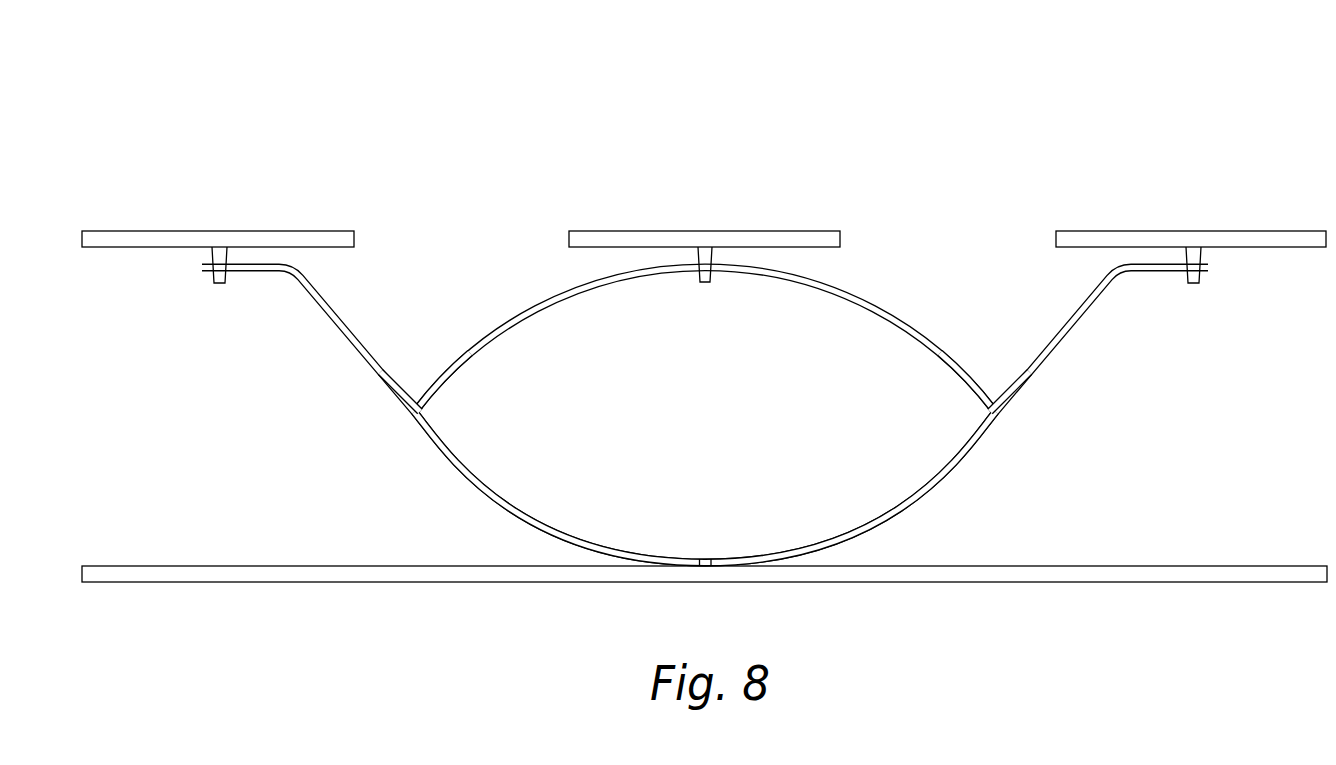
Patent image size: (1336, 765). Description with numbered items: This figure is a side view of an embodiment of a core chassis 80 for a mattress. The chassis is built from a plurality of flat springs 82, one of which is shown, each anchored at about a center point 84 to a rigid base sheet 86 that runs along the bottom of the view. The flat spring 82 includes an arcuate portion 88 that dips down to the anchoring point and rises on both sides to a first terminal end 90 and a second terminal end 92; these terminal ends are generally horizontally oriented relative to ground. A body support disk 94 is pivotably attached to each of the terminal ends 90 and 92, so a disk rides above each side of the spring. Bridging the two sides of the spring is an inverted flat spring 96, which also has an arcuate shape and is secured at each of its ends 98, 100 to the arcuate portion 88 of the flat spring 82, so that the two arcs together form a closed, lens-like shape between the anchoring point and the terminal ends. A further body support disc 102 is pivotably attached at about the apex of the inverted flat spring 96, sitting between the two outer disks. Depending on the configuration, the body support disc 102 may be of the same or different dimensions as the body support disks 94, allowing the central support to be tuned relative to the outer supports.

The core chassis 80 is at (704, 304).
The flat spring 82 is at (705, 389).
The center point 84 is at (712, 558).
The rigid base sheet 86 is at (220, 565).
The arcuate portion 88 is at (495, 494).
The first terminal end 90 is at (205, 271).
The second terminal end 92 is at (1202, 273).
The body support disk 94 is at (171, 230).
The inverted flat spring 96 is at (893, 318).
The end of inverted flat spring 98 is at (418, 407).
The end of inverted flat spring 100 is at (994, 408).
The body support disc 102 is at (752, 233).